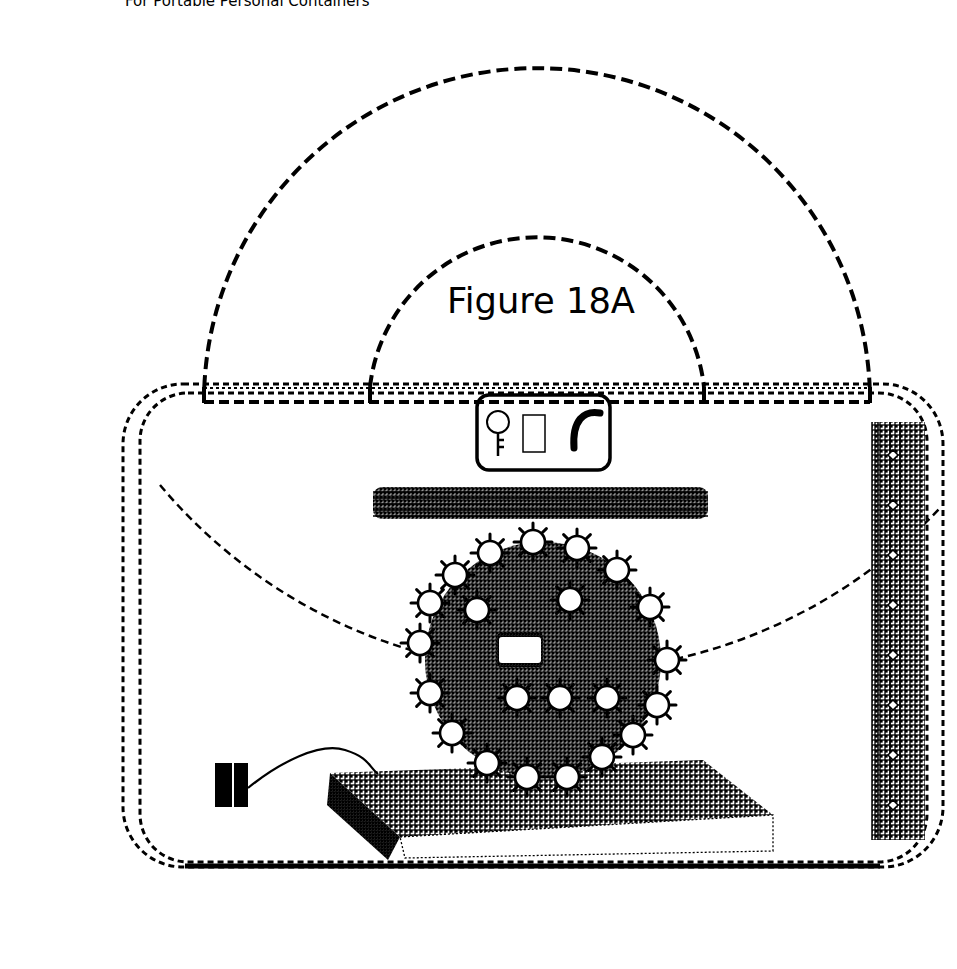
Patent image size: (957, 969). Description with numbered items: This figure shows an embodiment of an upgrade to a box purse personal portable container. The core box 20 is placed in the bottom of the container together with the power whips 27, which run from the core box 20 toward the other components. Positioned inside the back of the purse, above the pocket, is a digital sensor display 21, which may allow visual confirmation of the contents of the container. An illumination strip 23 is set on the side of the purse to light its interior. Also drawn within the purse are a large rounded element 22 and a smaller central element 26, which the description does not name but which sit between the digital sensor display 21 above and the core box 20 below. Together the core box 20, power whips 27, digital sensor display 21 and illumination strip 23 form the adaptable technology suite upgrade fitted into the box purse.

The core box 20 is at (680, 815).
The digital sensor display 21 is at (612, 431).
The spherical module 22 is at (481, 669).
The illumination strip 23 is at (870, 452).
The central module 26 is at (591, 660).
The power whips 27 is at (231, 757).